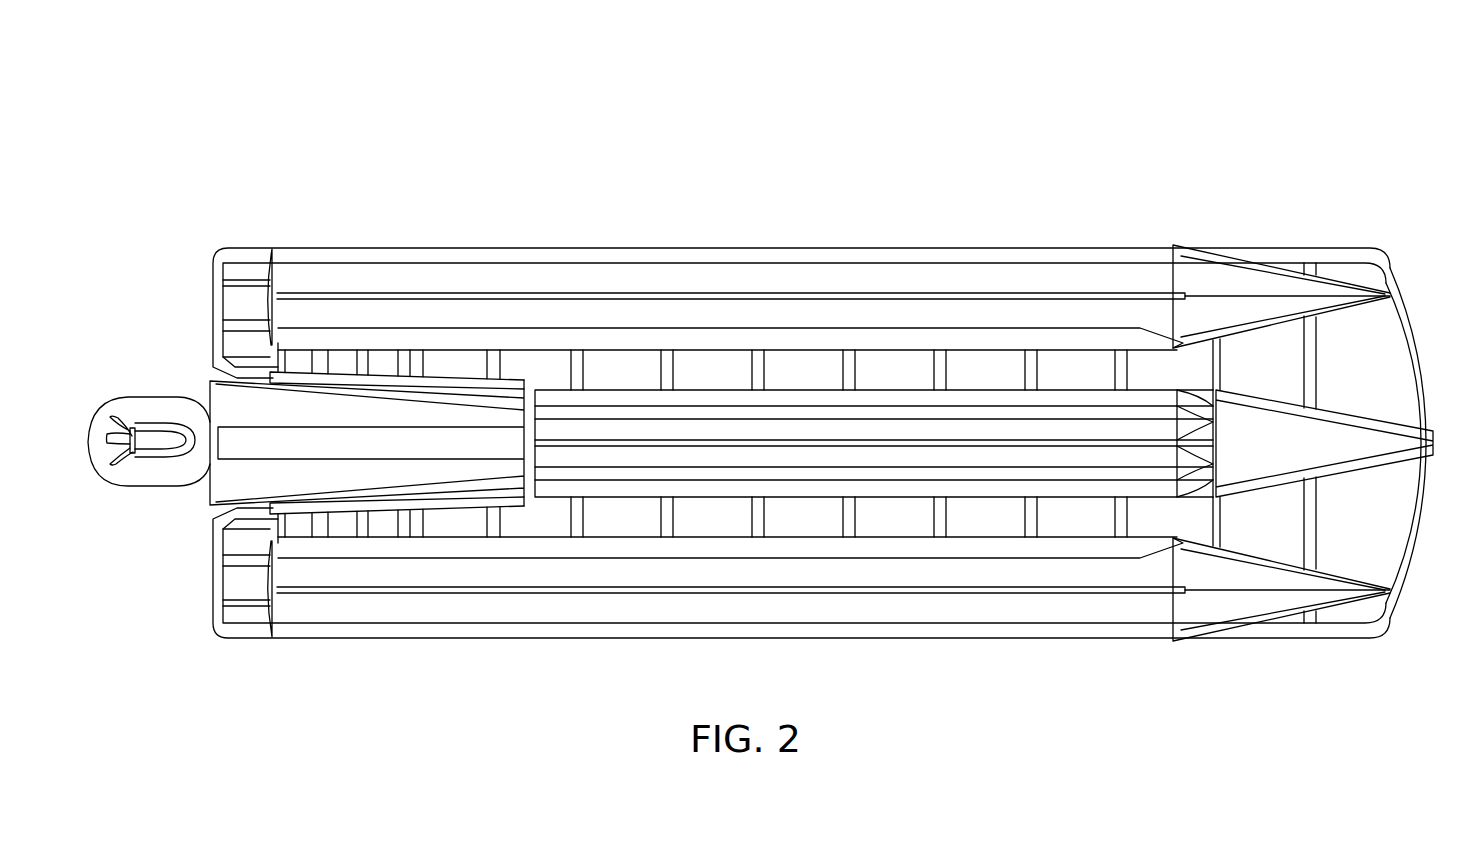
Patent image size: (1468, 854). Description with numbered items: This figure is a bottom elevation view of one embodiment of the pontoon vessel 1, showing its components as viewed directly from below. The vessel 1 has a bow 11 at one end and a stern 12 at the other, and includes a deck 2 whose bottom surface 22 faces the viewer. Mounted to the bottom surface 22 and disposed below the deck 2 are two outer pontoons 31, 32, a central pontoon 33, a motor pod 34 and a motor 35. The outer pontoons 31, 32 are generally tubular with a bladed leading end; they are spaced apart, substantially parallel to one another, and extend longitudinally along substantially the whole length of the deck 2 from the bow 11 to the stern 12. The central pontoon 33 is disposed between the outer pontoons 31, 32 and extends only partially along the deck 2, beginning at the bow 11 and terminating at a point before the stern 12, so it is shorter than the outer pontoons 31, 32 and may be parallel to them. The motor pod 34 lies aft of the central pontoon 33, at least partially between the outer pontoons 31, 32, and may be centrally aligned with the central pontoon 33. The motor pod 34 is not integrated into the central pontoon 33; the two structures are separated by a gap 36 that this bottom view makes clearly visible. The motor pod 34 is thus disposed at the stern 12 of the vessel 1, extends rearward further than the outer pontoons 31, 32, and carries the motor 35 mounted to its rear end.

The pontoon vessel 1 is at (1246, 147).
The deck 2 is at (1352, 243).
The bow 11 is at (1419, 354).
The stern 12 is at (123, 327).
The bottom surface 22 is at (1376, 382).
The outer pontoon 31 is at (907, 289).
The outer pontoon 32 is at (889, 619).
The central pontoon 33 is at (870, 430).
The motor pod 34 is at (371, 426).
The motor 35 is at (133, 497).
The gap 36 is at (530, 389).